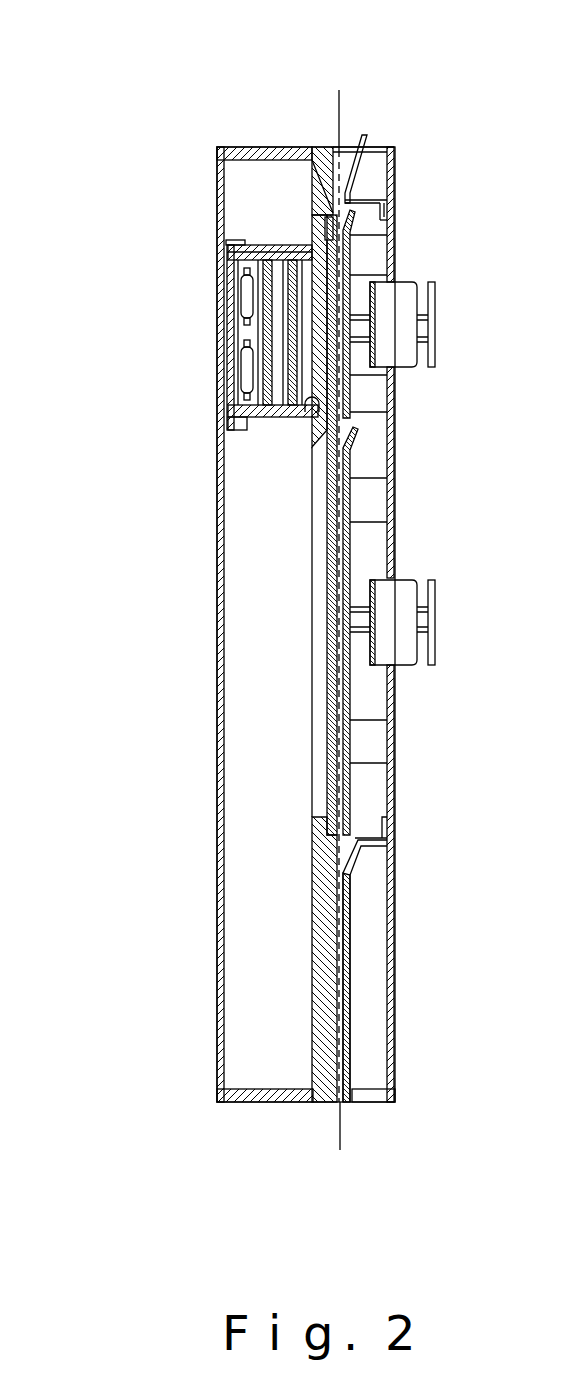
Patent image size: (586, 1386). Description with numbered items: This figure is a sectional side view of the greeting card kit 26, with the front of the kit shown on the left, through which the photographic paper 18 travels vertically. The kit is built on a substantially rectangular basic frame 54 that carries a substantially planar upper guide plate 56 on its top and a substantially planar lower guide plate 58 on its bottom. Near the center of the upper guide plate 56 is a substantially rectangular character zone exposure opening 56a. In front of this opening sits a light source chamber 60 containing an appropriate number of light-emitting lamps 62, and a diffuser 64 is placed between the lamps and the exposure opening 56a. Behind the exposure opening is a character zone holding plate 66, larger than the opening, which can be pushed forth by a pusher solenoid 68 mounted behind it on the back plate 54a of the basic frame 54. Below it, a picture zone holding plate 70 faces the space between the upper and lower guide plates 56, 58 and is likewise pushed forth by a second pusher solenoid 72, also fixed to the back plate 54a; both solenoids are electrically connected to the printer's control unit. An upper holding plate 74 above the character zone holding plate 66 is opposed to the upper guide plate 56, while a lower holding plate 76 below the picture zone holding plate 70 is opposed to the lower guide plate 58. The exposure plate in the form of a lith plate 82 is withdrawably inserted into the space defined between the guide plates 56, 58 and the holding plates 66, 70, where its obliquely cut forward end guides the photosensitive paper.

The greeting card kit 26 is at (190, 136).
The photographic paper 18 is at (340, 1125).
The basic frame 54 is at (255, 1090).
The back plate 54a is at (392, 455).
The upper guide plate 56 is at (325, 160).
The character zone exposure opening 56a is at (311, 411).
The lower guide plate 58 is at (323, 1093).
The light source chamber 60 is at (255, 227).
The light-emitting lamps 62 is at (245, 290).
The diffuser 64 is at (285, 240).
The character zone holding plate 66 is at (352, 257).
The pusher solenoid 68 is at (398, 346).
The picture zone holding plate 70 is at (350, 788).
The pusher solenoid 72 is at (399, 651).
The upper holding plate 74 is at (355, 172).
The lower holding plate 76 is at (352, 960).
The lith plate 82 is at (328, 613).